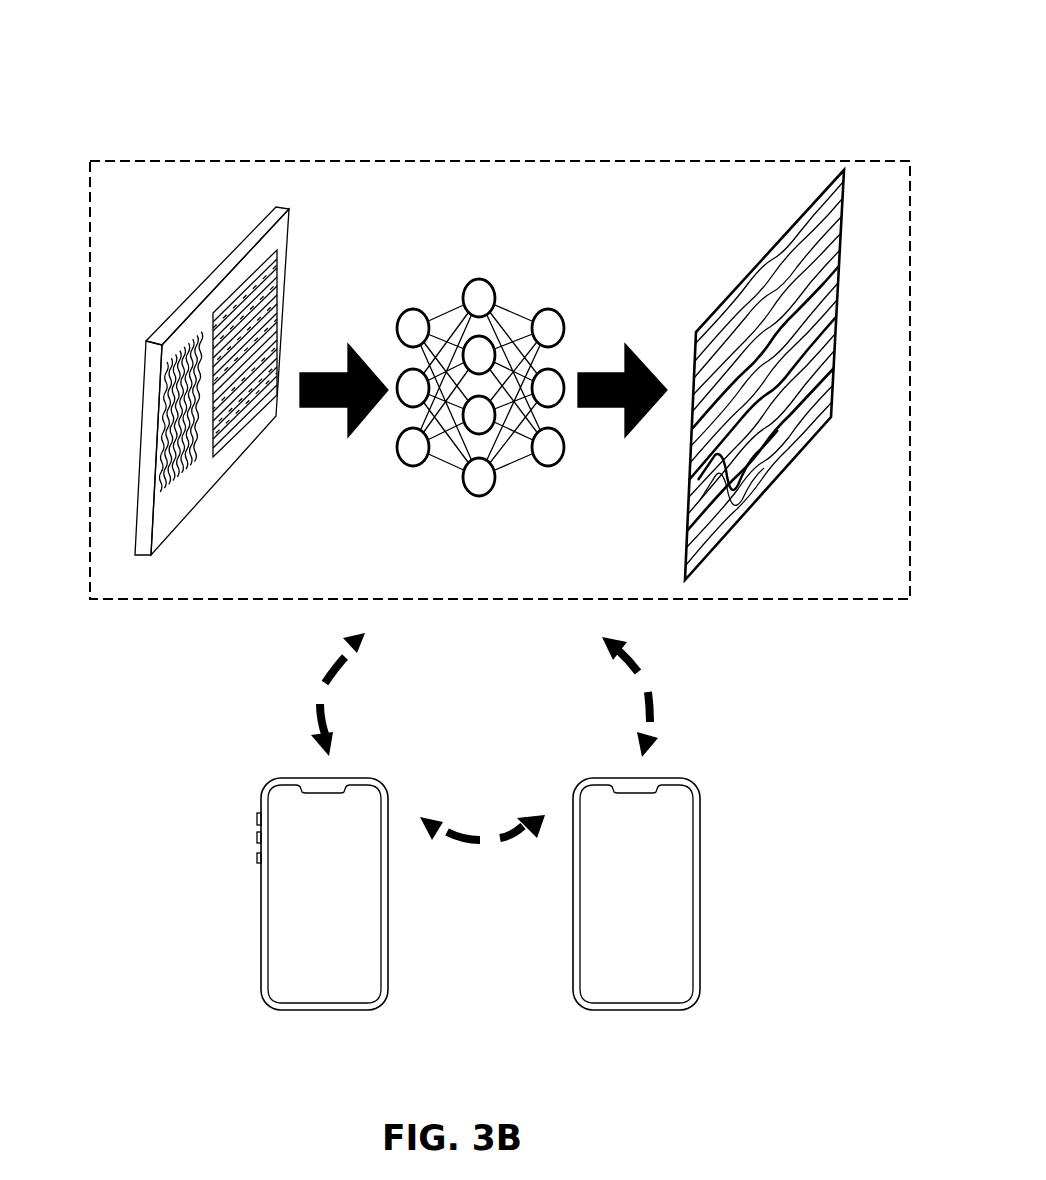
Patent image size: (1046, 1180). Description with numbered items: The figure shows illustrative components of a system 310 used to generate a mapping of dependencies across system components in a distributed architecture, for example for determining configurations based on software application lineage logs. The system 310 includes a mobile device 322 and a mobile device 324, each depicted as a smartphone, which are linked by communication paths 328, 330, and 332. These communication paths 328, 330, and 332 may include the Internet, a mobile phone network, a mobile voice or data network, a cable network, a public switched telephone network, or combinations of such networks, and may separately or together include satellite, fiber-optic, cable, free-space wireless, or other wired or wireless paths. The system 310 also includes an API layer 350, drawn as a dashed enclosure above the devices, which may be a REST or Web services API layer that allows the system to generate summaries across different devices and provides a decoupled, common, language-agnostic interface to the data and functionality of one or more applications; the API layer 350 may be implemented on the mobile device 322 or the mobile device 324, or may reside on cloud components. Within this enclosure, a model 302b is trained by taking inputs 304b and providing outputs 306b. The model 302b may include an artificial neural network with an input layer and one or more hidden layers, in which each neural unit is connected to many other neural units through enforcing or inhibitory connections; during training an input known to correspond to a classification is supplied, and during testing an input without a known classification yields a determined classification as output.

The system 310 is at (472, 72).
The API layer 350 is at (604, 141).
The model 302b is at (458, 246).
The inputs 304b is at (213, 506).
The outputs 306b is at (797, 496).
The mobile device 322 is at (240, 873).
The mobile device 324 is at (712, 877).
The communication path 328 is at (302, 679).
The communication path 330 is at (675, 683).
The communication path 332 is at (469, 859).